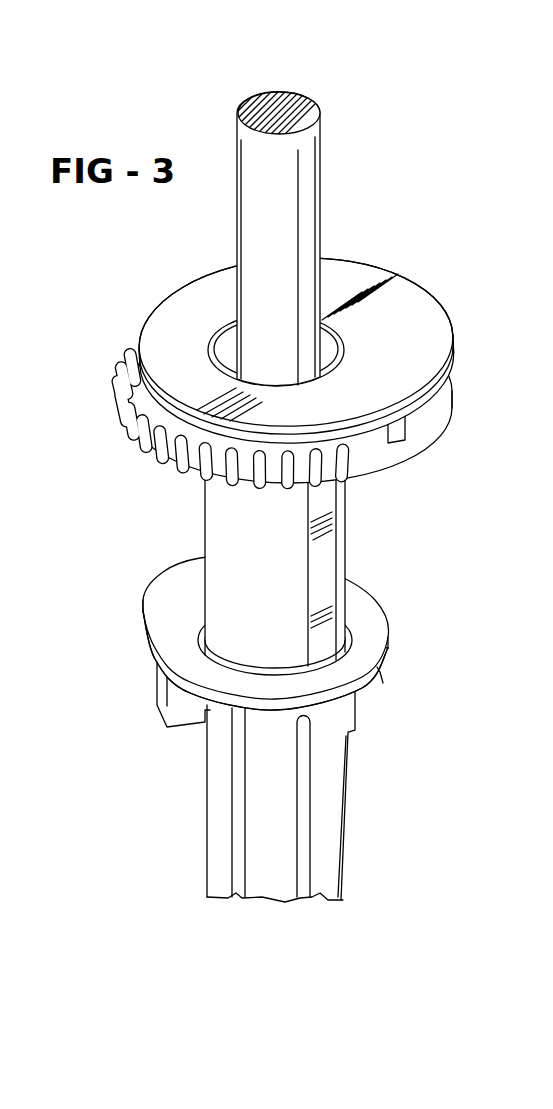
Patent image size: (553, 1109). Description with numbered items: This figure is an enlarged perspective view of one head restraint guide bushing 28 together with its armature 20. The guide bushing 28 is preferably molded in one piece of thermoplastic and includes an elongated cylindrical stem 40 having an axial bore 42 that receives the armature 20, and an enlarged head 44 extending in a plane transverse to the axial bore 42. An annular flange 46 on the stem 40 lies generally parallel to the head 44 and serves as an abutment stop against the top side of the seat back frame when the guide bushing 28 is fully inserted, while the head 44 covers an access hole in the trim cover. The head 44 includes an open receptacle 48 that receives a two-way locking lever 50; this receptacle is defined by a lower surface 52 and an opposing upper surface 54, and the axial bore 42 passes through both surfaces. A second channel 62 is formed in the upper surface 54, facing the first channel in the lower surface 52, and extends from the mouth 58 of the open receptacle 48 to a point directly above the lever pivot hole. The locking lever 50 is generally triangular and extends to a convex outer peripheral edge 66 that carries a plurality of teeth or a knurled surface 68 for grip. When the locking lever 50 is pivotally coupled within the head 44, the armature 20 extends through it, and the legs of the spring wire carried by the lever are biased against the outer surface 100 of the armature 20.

The armature 20 is at (276, 235).
The guide bushing 28 is at (323, 337).
The elongated cylindrical stem 40 is at (345, 545).
The axial bore 42 is at (222, 330).
The enlarged head 44 is at (432, 330).
The annular flange 46 is at (372, 650).
The open receptacle 48 is at (405, 438).
The two-way locking lever 50 is at (269, 435).
The lower surface 52 is at (380, 428).
The upper surface 54 is at (377, 430).
The mouth 58 is at (128, 402).
The second channel 62 is at (137, 436).
The outer peripheral edge 66 is at (218, 485).
The teeth or knurled surface 68 is at (178, 472).
The outer surface of the armature 100 is at (283, 271).